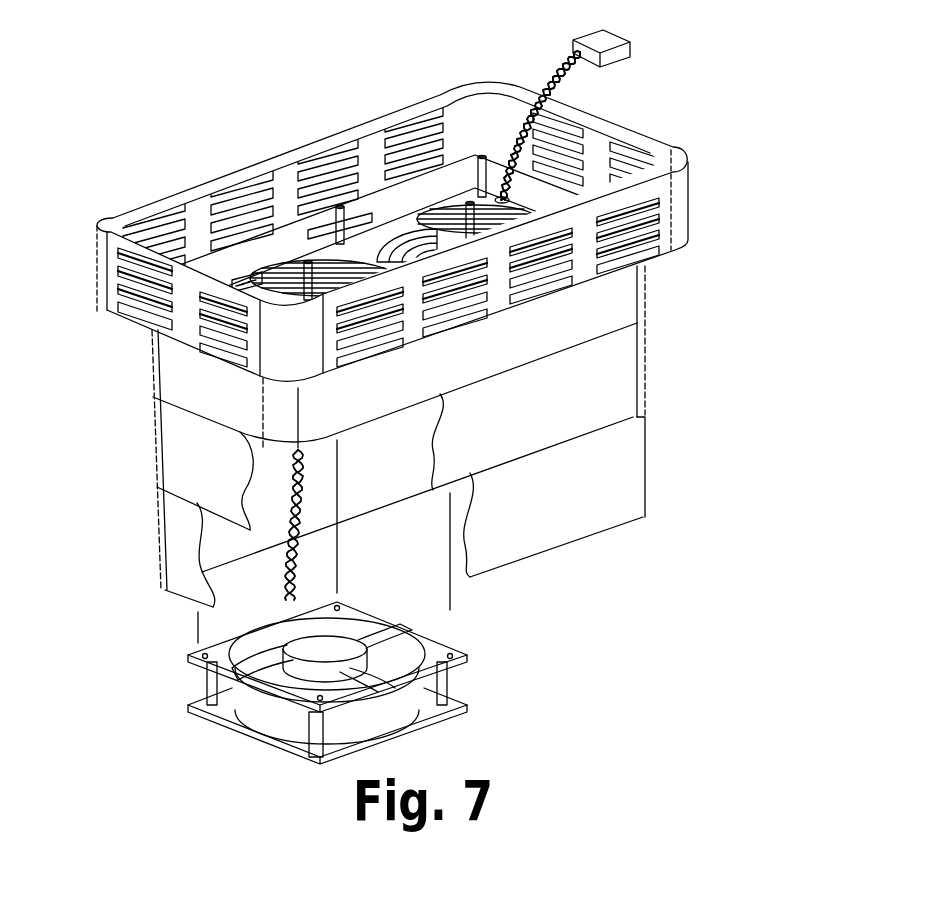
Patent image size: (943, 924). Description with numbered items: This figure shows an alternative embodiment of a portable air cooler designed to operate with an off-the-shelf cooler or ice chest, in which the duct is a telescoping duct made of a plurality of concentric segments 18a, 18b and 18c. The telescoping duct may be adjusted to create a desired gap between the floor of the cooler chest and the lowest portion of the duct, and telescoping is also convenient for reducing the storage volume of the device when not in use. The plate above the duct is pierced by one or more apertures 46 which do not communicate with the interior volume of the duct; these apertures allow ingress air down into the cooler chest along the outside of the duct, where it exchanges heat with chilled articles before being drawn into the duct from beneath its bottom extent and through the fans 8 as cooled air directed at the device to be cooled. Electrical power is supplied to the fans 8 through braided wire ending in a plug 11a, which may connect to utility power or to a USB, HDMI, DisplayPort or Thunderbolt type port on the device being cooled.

The apertures 46 is at (263, 253).
The plug 11a is at (630, 47).
The concentric segment of telescoping duct 18a is at (610, 308).
The concentric segment of telescoping duct 18b is at (617, 387).
The concentric segment of telescoping duct 18c is at (618, 480).
The fans 8 is at (200, 683).